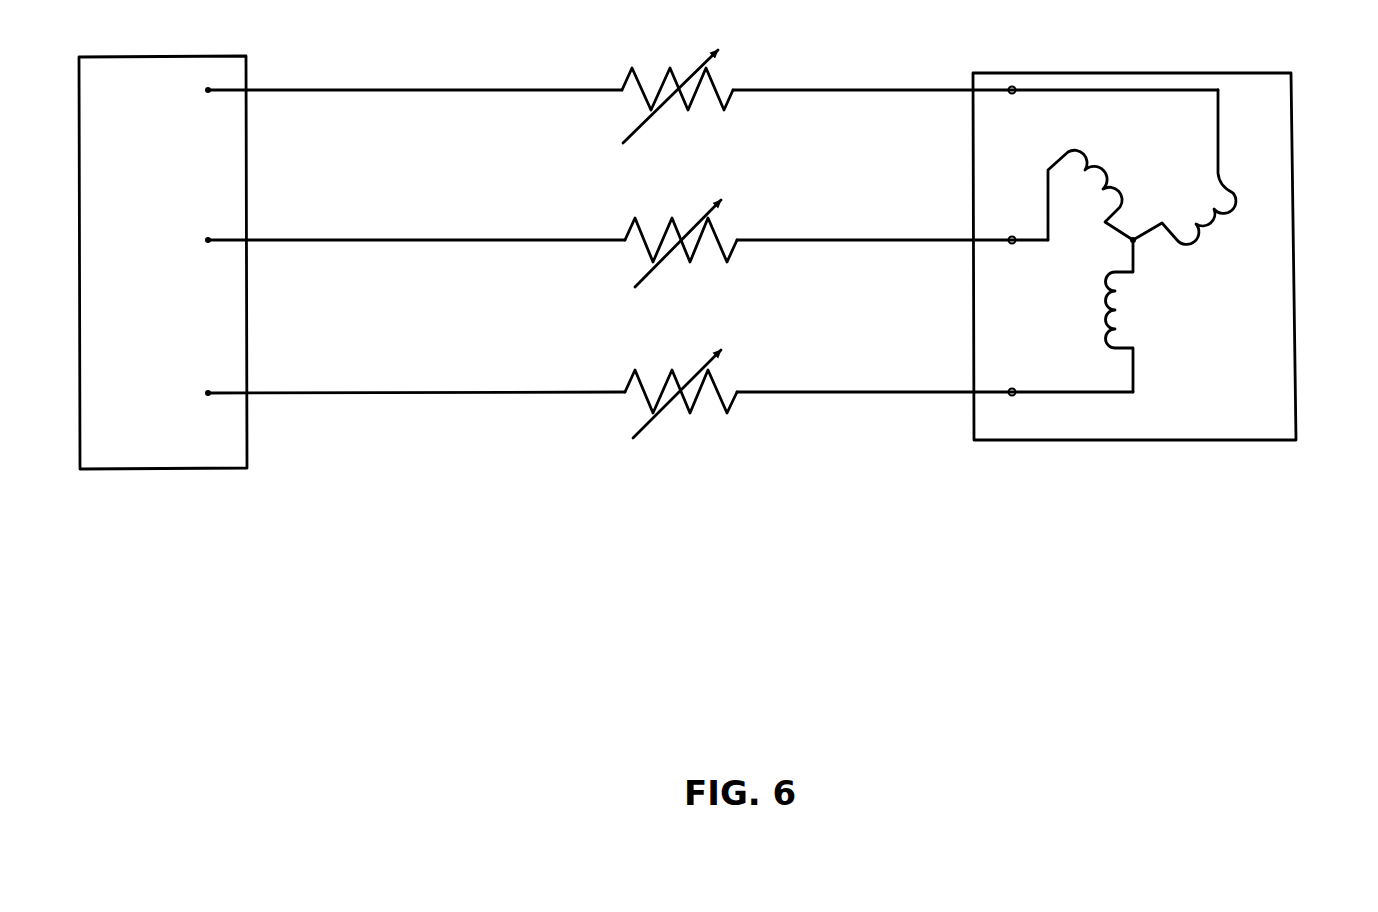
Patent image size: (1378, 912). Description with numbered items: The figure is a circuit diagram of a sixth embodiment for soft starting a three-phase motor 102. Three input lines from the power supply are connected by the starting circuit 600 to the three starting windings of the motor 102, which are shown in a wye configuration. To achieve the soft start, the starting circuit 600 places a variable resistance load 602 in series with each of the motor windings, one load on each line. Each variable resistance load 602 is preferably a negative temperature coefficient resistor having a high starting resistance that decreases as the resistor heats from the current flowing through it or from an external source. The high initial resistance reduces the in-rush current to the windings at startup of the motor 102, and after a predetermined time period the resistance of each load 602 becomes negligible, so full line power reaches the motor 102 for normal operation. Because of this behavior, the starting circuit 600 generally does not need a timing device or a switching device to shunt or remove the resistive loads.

The motor 102 is at (110, 470).
The variable resistance load 602 is at (682, 110).
The starting circuit 600 is at (560, 591).